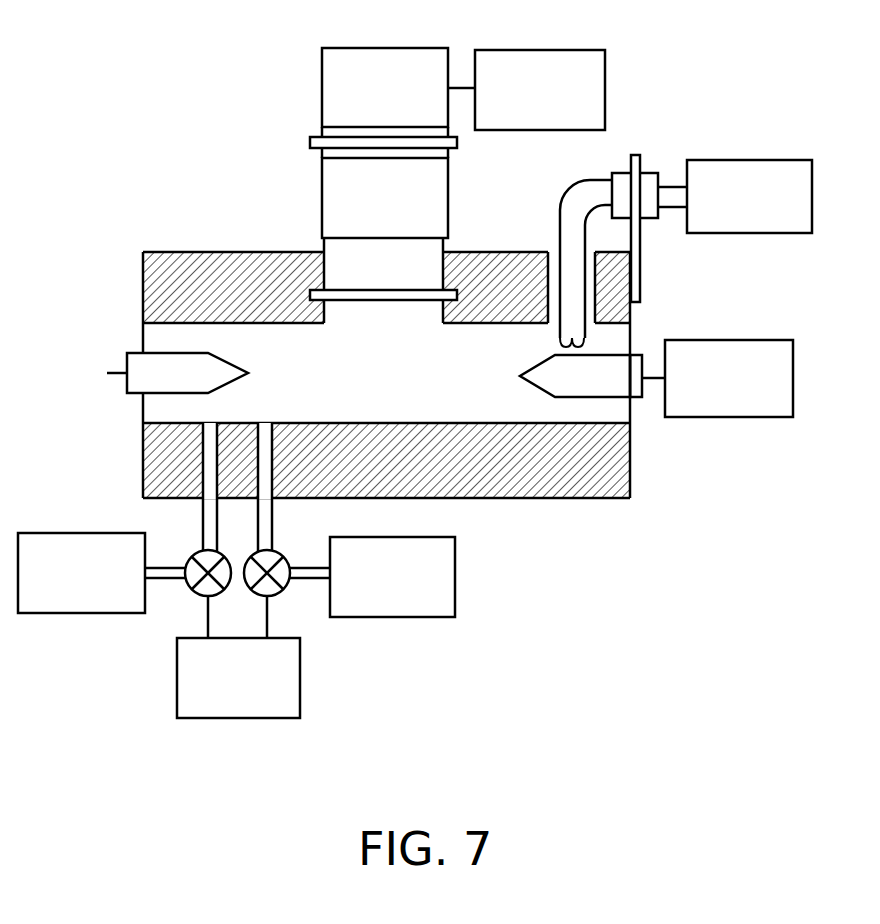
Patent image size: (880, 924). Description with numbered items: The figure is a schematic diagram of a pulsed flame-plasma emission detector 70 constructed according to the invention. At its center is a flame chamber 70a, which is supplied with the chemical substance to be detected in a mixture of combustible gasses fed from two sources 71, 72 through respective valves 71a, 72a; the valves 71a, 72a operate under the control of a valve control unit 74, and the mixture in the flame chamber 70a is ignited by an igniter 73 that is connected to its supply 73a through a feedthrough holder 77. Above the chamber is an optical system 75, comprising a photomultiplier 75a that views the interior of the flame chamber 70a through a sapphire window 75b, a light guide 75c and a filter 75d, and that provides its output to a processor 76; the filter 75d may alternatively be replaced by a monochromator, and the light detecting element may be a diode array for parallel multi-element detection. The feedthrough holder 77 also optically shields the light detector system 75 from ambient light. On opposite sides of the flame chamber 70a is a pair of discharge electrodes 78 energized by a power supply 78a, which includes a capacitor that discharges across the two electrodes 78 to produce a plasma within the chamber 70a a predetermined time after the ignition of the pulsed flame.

The detector 70 is at (143, 262).
The flame chamber 70a is at (418, 403).
The gas source 71 is at (98, 588).
The valve 71a is at (194, 591).
The gas source 72 is at (430, 592).
The valve 72a is at (286, 593).
The igniter 73 is at (590, 339).
The tube gas source 73a is at (790, 215).
The valve control unit 74 is at (268, 692).
The optical system 75 is at (331, 167).
The photomultiplier 75a is at (413, 102).
The sapphire window 75b is at (312, 283).
The light guide 75c is at (420, 215).
The filter 75d is at (310, 133).
The processor 76 is at (570, 102).
The feedthrough holder 77 is at (646, 159).
The discharge electrodes 78 is at (295, 366).
The power supply 78a is at (772, 397).